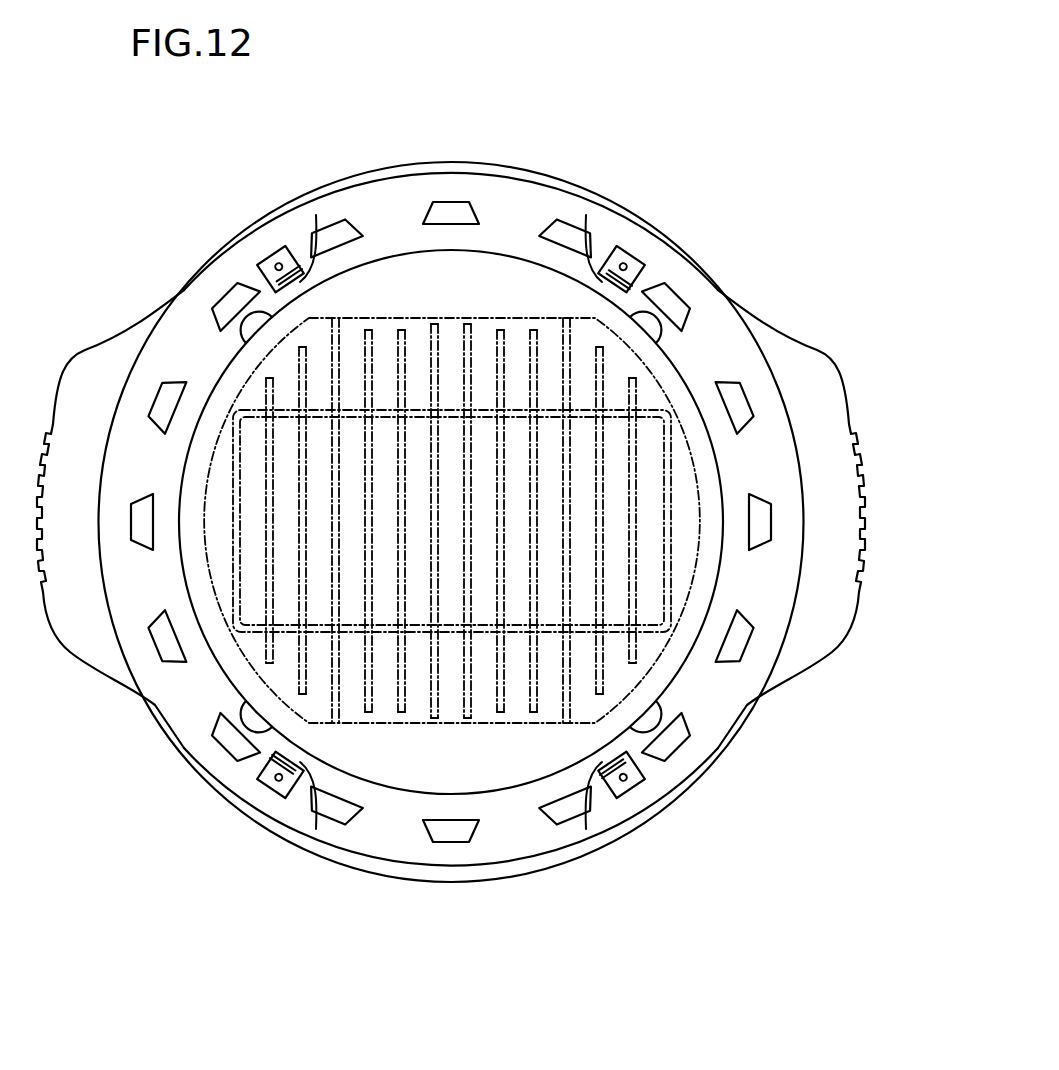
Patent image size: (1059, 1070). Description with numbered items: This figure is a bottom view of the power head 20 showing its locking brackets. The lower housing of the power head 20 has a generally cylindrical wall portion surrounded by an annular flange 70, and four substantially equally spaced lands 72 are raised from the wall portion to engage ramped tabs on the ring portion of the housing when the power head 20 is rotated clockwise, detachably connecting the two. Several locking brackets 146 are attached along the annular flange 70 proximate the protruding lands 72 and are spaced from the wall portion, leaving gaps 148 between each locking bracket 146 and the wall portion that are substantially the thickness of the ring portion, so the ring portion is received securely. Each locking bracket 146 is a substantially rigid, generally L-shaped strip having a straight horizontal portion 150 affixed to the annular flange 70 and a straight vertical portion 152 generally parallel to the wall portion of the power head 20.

The power head 20 is at (421, 158).
The annular flange 70 is at (509, 213).
The lands 72 is at (242, 337).
The locking brackets 146 is at (277, 245).
The gaps 148 is at (316, 215).
The horizontal portion 150 is at (267, 263).
The vertical portion 152 is at (273, 235).